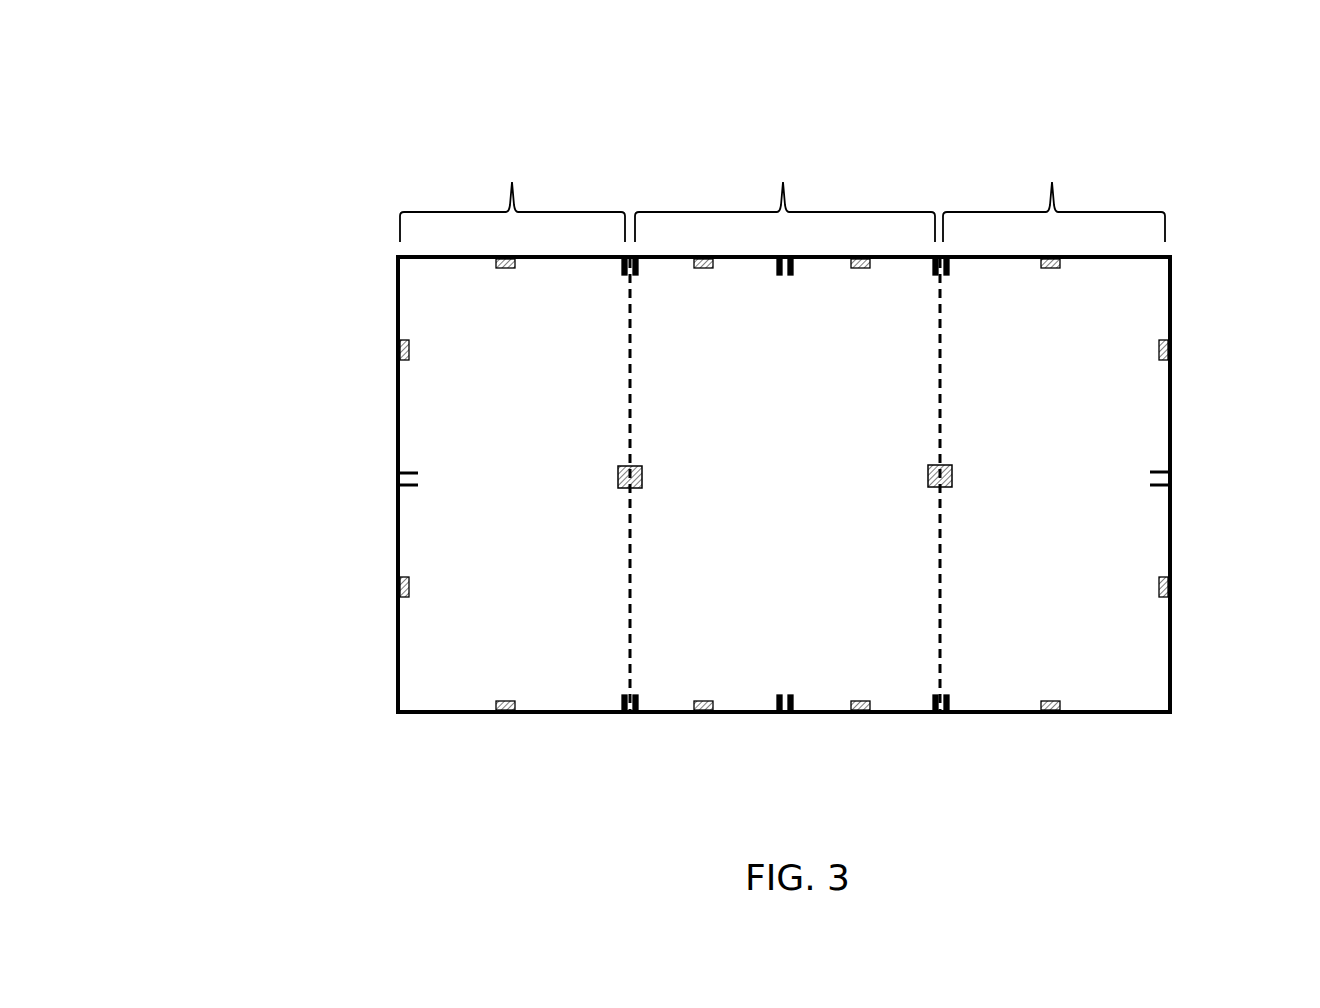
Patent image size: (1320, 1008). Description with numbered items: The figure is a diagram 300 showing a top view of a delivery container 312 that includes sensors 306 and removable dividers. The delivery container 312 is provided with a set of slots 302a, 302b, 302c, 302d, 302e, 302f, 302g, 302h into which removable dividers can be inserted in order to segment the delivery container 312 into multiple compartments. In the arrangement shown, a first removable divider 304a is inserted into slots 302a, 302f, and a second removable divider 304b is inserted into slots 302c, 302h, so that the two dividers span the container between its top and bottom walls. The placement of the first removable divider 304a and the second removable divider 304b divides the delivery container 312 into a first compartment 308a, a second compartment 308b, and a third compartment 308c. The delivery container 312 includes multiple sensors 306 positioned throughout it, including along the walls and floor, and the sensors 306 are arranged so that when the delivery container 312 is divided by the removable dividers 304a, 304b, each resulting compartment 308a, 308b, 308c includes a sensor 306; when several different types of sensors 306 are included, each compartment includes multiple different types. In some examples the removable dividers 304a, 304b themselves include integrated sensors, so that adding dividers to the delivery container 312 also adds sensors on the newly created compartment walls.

The diagram 300 is at (206, 63).
The slot 302a is at (606, 268).
The slot 302b is at (766, 270).
The slot 302c is at (921, 268).
The slot 302d is at (452, 458).
The slot 302e is at (1138, 480).
The slot 302f is at (668, 688).
The slot 302g is at (797, 706).
The slot 302h is at (988, 688).
The first removable divider 304a is at (615, 567).
The second removable divider 304b is at (930, 567).
The sensors 306 is at (398, 354).
The first compartment 308a is at (512, 192).
The second compartment 308b is at (785, 193).
The third compartment 308c is at (1054, 190).
The delivery container 312 is at (1186, 300).